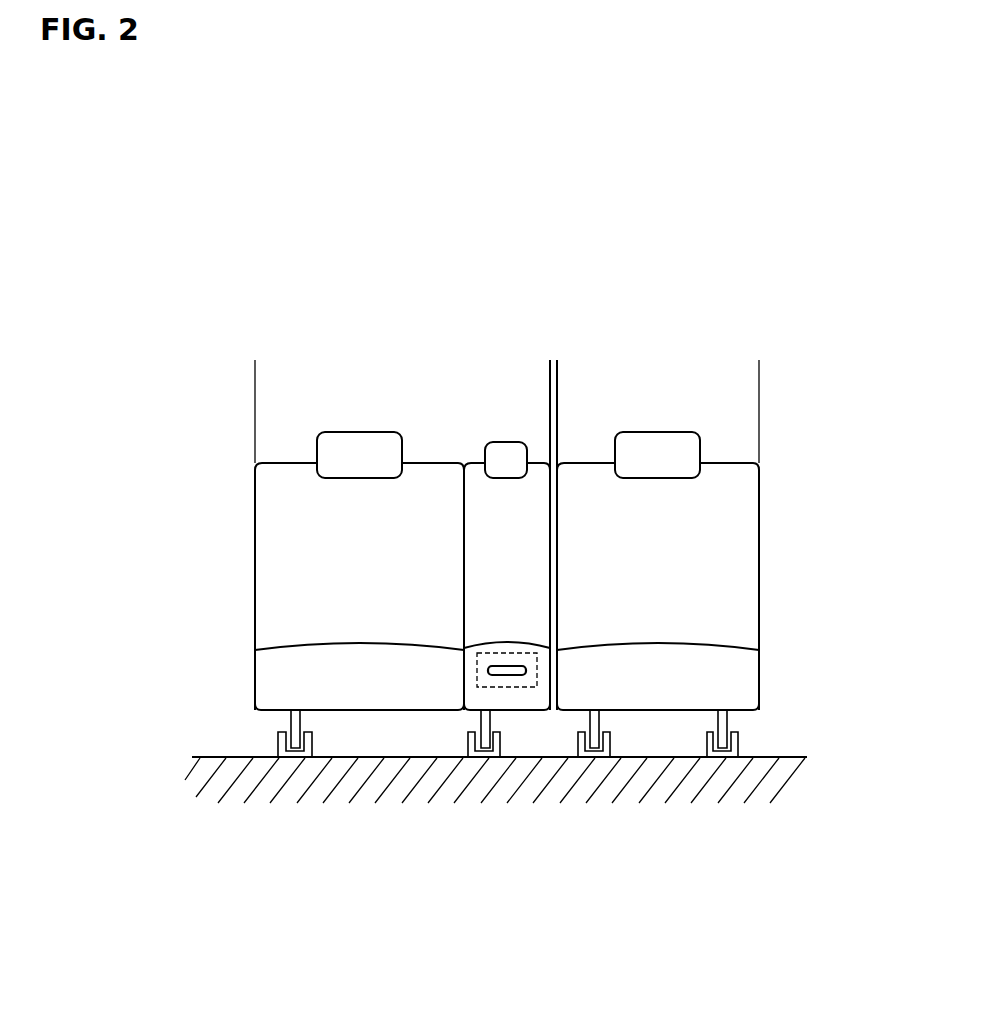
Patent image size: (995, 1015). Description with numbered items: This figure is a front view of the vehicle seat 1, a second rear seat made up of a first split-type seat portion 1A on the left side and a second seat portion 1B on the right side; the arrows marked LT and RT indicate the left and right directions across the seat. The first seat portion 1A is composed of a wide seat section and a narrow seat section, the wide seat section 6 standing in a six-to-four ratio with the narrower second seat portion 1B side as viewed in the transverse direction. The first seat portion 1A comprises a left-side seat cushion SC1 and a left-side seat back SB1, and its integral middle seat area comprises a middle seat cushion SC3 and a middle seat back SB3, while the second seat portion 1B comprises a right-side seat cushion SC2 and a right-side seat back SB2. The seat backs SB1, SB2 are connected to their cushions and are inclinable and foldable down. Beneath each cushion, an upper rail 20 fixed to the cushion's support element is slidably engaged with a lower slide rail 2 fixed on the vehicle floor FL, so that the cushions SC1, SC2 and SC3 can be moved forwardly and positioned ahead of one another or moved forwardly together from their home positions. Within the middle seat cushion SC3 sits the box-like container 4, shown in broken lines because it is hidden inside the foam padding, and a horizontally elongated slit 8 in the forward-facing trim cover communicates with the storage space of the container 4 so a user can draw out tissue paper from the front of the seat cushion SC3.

The vehicle seat 1 is at (806, 439).
The first split-type seat portion 1A is at (550, 318).
The second seat portion 1B is at (759, 318).
The slide rail 2 is at (273, 757).
The box-like container 4 is at (759, 373).
The wide seat section 6 is at (550, 373).
The slit 8 is at (489, 668).
The upper rail 20 is at (290, 723).
The left-side seat back SB1 is at (380, 543).
The right-side seat back SB2 is at (681, 543).
The middle seat back SB3 is at (517, 543).
The left-side seat cushion SC1 is at (380, 686).
The right-side seat cushion SC2 is at (681, 685).
The middle seat cushion SC3 is at (525, 640).
The vehicle floor FL is at (773, 757).
The left direction LT is at (200, 516).
The right direction RT is at (855, 521).